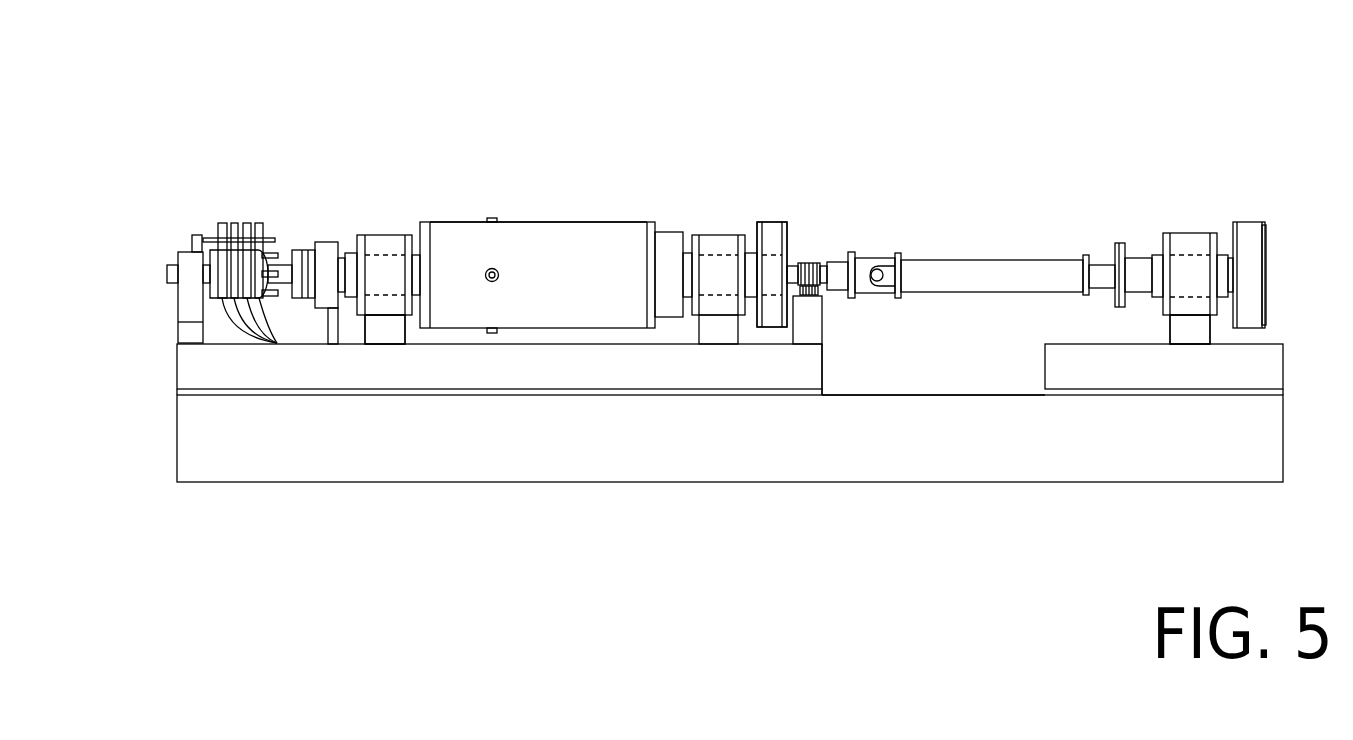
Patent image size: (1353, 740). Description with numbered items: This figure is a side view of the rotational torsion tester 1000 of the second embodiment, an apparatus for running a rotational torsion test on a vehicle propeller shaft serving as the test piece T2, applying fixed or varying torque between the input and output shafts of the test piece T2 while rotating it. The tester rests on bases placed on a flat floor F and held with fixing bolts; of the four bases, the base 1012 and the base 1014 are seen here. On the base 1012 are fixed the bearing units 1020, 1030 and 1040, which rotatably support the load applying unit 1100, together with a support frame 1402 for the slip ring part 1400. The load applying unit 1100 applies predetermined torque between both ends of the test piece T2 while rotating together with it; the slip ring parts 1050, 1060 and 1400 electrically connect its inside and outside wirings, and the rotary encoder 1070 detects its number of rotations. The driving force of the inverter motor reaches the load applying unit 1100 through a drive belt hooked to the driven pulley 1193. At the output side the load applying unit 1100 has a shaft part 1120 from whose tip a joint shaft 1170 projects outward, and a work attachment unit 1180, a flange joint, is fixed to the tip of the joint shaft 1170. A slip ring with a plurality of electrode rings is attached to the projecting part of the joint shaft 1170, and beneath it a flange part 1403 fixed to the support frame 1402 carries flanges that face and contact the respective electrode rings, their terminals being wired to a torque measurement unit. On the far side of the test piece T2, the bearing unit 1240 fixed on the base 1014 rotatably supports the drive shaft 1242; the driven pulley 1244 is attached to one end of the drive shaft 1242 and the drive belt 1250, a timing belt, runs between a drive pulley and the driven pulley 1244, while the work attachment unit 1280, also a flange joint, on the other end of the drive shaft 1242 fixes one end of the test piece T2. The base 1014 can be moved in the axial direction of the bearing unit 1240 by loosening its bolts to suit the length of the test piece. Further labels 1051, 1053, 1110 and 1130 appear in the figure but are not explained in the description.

The rotational torsion tester 1000 is at (1215, 138).
The base 1012 is at (177, 365).
The base 1014 is at (1281, 367).
The bearing unit 1020 is at (720, 227).
The bearing unit 1030 is at (389, 230).
The bearing unit 1040 is at (169, 250).
The slip ring part 1050 is at (208, 220).
The cable guide 1051 is at (275, 339).
The slip ring plates 1053 is at (222, 223).
The slip ring part 1060 is at (162, 278).
The rotary encoder 1070 is at (329, 236).
The load applying unit 1100 is at (538, 204).
The motor housing 1110 is at (626, 180).
The shaft part 1120 is at (775, 297).
The support 1130 is at (383, 297).
The joint shaft 1170 is at (826, 263).
The work attachment unit 1180 is at (838, 262).
The driven pulley 1193 is at (777, 222).
The bearing unit 1240 is at (1184, 229).
The drive shaft 1242 is at (1190, 297).
The driven pulley 1244 is at (1267, 238).
The drive belt 1250 is at (1248, 222).
The work attachment unit 1280 is at (1138, 253).
The slip ring part 1400 is at (808, 262).
The support frame 1402 is at (816, 325).
The flange part 1403 is at (826, 296).
The test piece T2 is at (978, 260).
The floor F is at (980, 395).